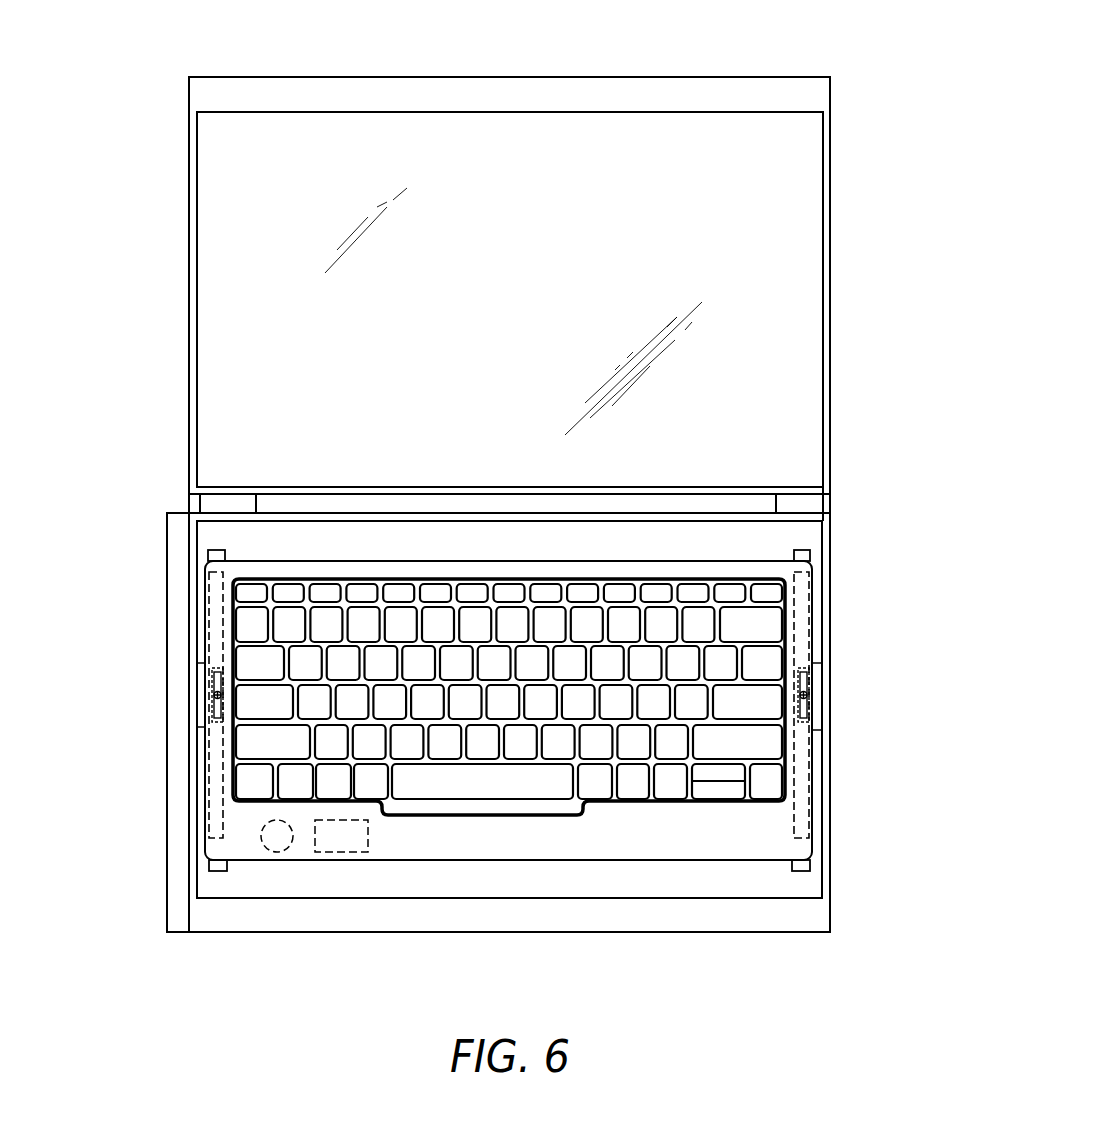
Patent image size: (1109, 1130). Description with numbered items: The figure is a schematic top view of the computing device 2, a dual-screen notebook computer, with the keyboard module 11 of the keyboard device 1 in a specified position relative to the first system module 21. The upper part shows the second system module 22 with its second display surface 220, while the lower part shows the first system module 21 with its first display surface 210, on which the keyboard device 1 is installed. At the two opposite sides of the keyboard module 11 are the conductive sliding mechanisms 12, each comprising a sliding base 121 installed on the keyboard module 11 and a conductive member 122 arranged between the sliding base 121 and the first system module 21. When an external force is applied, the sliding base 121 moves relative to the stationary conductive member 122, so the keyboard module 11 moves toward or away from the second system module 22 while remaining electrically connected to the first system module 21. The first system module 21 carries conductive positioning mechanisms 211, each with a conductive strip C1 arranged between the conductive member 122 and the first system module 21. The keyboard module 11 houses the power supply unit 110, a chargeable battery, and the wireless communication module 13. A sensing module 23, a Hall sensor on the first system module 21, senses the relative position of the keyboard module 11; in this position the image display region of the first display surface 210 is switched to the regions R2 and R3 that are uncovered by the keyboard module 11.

The computing device 2 is at (838, 67).
The second system module 22 is at (803, 238).
The second display surface 220 is at (795, 358).
The first system module 21 is at (772, 533).
The first display surface 210 is at (775, 552).
The sensing module 23 is at (179, 932).
The region R2 is at (258, 545).
The keyboard device 1 is at (505, 763).
The keyboard module 11 is at (623, 848).
The conductive strip C1 is at (501, 726).
The conductive positioning mechanism 211 is at (208, 555).
The conductive sliding mechanism 12 is at (508, 705).
The sliding base 121 is at (210, 782).
The conductive member 122 is at (212, 690).
The power supply unit 110 is at (277, 853).
The wireless communication module 13 is at (345, 853).
The region R3 is at (723, 876).